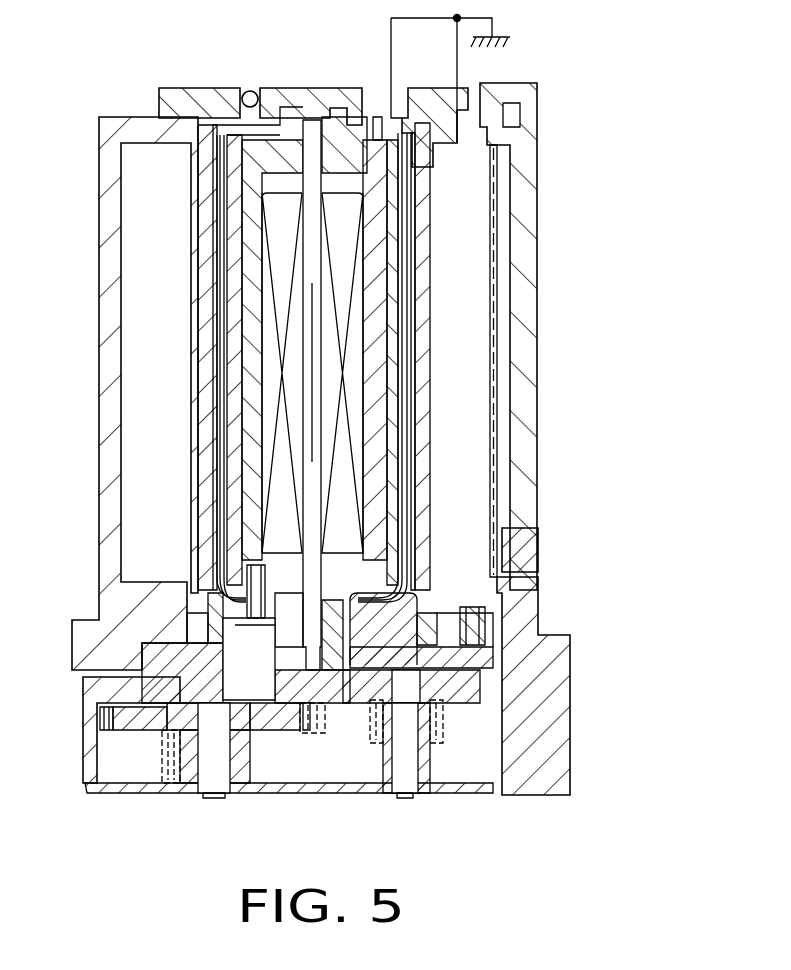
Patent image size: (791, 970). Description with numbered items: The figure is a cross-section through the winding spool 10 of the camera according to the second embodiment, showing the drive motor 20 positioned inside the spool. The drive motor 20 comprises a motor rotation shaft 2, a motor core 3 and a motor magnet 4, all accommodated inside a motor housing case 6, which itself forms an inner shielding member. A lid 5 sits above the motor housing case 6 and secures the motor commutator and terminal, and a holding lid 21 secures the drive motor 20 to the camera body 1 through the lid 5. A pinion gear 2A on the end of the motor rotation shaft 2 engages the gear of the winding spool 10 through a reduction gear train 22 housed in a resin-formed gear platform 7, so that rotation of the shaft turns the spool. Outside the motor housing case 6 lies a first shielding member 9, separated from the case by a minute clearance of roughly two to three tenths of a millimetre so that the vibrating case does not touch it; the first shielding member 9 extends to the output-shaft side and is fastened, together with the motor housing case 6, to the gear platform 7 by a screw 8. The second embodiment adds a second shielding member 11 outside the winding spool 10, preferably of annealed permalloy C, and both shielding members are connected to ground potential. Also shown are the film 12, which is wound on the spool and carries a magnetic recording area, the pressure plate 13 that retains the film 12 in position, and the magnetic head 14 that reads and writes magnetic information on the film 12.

The camera body 1 is at (100, 408).
The motor rotation shaft 2 is at (304, 120).
The pinion gear 2A is at (297, 693).
The motor core 3 is at (348, 193).
The motor magnet 4 is at (376, 424).
The lid 5 is at (278, 97).
The motor housing case 6 is at (390, 354).
The gear platform 7 is at (92, 688).
The screw 8 is at (257, 624).
The shielding member 9 is at (406, 284).
The winding spool 10 is at (421, 242).
The shielding member 11 is at (432, 220).
The film 12 is at (494, 350).
The pressure plate 13 is at (522, 275).
The magnetic head 14 is at (539, 553).
The drive motor 20 is at (334, 117).
The holding lid 21 is at (218, 88).
The reduction gear train 22 is at (238, 777).